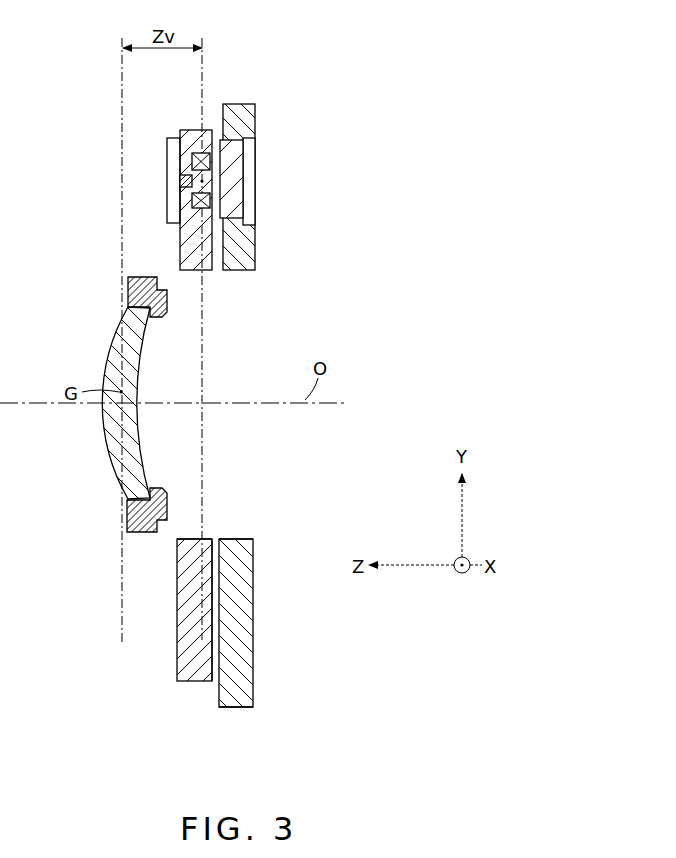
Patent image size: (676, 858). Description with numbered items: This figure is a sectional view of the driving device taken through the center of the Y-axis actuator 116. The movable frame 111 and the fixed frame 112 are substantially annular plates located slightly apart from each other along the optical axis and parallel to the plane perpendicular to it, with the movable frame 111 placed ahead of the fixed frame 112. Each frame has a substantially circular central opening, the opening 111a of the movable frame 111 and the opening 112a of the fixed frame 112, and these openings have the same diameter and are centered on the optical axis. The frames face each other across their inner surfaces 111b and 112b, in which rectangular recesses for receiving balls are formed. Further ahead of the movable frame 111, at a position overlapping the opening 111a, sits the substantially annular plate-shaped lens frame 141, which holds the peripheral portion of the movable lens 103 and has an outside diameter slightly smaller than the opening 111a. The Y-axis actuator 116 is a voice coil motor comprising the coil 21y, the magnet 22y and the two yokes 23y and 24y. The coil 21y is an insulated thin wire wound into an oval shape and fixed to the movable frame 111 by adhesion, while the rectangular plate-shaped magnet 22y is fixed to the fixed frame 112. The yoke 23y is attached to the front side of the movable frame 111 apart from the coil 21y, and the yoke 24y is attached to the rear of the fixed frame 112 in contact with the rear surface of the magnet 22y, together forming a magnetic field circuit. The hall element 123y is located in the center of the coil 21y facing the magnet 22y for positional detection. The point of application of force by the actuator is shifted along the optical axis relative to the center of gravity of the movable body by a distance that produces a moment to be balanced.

The movable lens 103 is at (104, 426).
The lens frame 141 is at (127, 513).
The Y-axis actuator 116 is at (229, 168).
The coil 21y is at (191, 131).
The magnet 22y is at (235, 160).
The yoke 23y is at (173, 137).
The yoke 24y is at (250, 203).
The hall element 123y is at (184, 185).
The movable frame 111 is at (190, 640).
The opening 111a is at (192, 531).
The inner surface 111b is at (213, 538).
The fixed frame 112 is at (244, 632).
The opening 112a is at (240, 533).
The inner surface 112b is at (218, 688).